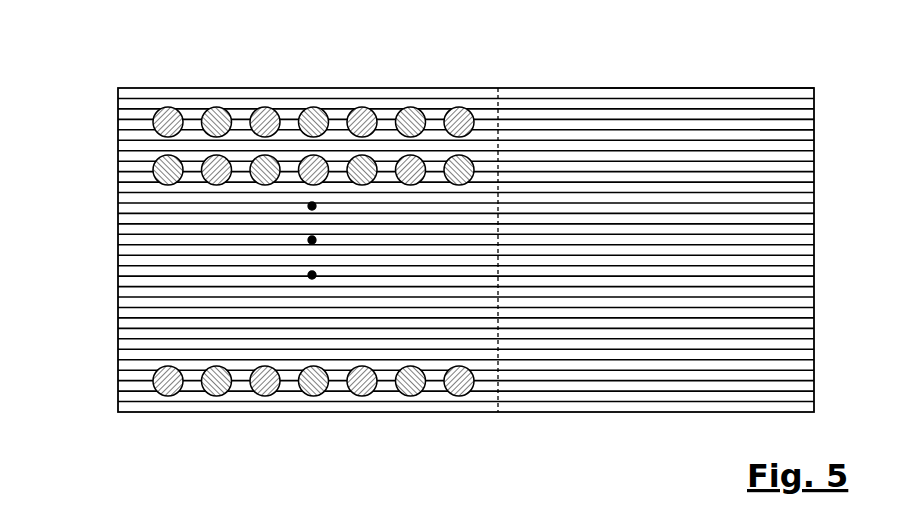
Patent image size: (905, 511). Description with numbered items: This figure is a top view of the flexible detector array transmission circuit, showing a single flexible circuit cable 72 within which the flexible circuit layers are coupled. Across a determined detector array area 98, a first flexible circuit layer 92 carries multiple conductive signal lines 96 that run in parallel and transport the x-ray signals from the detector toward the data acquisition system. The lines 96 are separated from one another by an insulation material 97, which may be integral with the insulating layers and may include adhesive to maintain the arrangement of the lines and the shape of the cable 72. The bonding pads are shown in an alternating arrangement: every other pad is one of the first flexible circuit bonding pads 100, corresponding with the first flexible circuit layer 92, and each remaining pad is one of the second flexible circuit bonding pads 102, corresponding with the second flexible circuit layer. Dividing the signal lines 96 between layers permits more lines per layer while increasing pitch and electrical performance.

The detector array area 98 is at (117, 117).
The flexible circuit cable 72 is at (297, 87).
The first flexible circuit layer 92 is at (387, 87).
The conductive signal lines 96 is at (767, 96).
The insulation material 97 is at (804, 120).
The first flexible circuit bonding pads 100 is at (258, 105).
The second flexible circuit bonding pads 102 is at (304, 239).